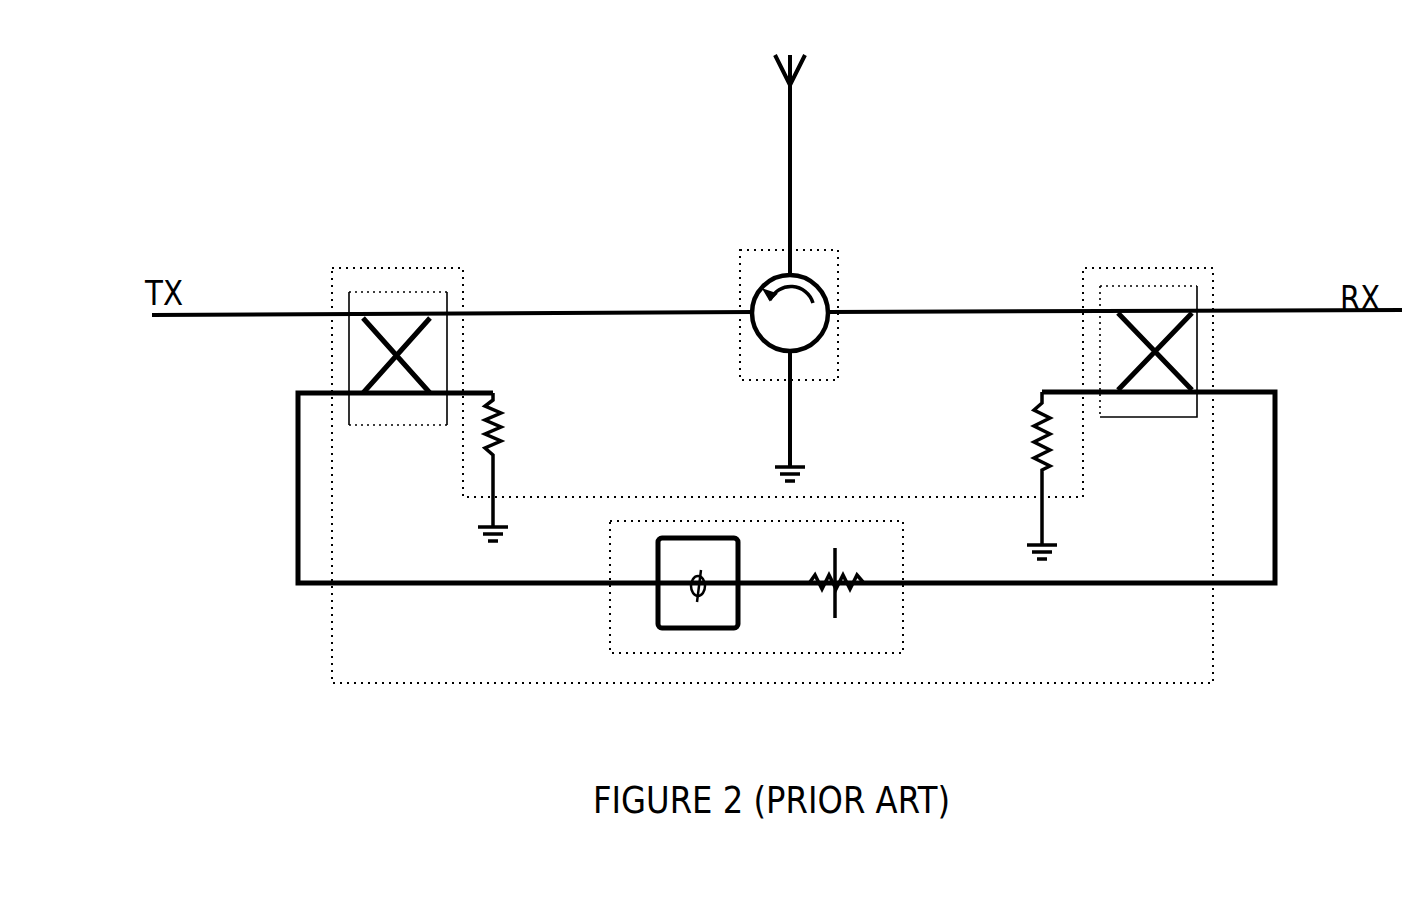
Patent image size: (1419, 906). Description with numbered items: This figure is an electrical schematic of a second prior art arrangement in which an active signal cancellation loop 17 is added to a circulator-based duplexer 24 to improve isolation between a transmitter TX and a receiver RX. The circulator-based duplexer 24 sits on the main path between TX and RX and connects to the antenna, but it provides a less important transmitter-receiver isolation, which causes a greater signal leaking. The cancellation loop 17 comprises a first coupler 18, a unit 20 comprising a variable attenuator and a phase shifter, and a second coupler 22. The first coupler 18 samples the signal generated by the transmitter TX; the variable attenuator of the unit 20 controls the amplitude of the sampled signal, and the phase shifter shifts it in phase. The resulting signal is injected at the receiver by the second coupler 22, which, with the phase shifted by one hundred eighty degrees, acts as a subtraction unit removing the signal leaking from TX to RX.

The active signal cancellation loop 17 is at (838, 683).
The first coupler 18 is at (398, 292).
The unit comprising a variable attenuator and a phase shifter 20 is at (755, 653).
The second coupler 22 is at (1150, 285).
The circulator-based duplexer 24 is at (849, 240).